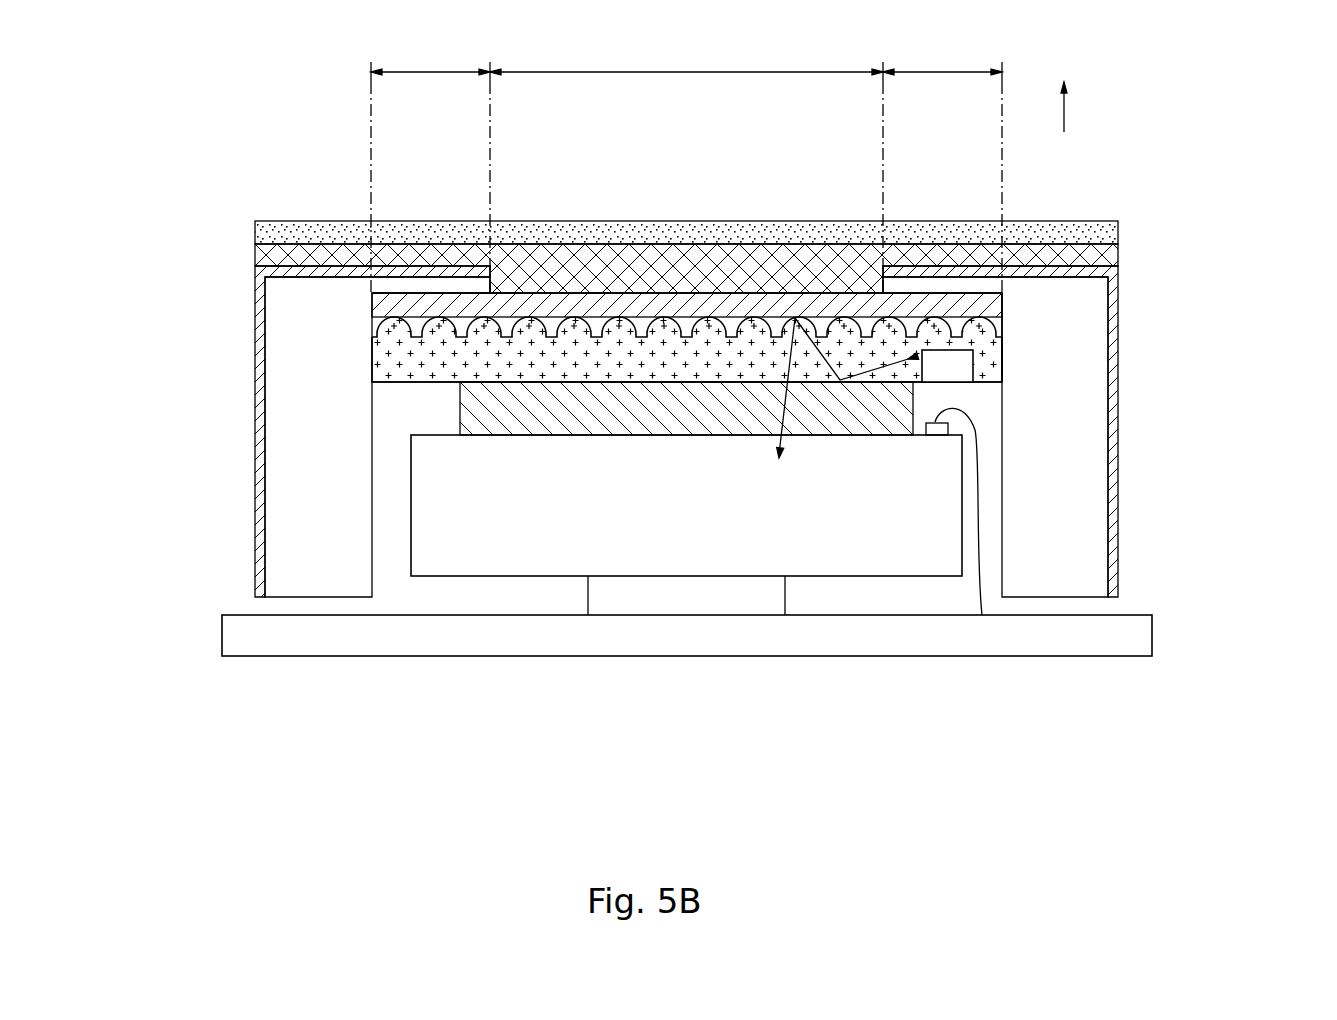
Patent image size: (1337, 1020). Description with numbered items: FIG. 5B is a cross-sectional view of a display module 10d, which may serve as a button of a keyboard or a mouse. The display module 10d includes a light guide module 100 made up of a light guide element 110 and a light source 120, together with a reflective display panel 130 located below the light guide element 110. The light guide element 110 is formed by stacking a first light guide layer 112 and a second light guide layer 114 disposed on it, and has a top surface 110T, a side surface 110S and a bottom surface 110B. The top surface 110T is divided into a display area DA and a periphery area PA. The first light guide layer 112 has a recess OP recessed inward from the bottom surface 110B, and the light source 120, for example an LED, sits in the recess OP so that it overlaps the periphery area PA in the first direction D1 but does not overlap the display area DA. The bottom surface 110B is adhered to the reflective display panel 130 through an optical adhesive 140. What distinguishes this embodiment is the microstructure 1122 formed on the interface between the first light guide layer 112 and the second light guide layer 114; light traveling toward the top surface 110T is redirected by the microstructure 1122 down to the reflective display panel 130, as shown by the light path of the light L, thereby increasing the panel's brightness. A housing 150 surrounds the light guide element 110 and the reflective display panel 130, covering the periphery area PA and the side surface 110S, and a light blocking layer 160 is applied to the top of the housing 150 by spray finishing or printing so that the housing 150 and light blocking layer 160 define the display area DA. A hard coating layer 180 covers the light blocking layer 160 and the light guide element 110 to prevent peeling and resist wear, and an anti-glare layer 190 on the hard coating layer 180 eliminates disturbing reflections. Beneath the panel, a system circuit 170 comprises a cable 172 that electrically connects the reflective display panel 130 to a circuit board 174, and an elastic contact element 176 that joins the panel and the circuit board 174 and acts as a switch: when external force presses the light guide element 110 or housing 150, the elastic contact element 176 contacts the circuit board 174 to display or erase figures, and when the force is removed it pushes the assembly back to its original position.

The display module 10d is at (160, 32).
The light guide module 100 is at (140, 68).
The light guide element 110 is at (1250, 222).
The first light guide layer 112 is at (995, 355).
The second light guide layer 114 is at (995, 312).
The microstructure 1122 is at (932, 322).
The top surface 110T is at (978, 293).
The side surface 110S is at (1003, 370).
The bottom surface 110B is at (990, 392).
The light source 120 is at (950, 368).
The reflective display panel 130 is at (470, 517).
The optical adhesive 140 is at (470, 420).
The housing 150 is at (312, 370).
The light blocking layer 160 is at (262, 316).
The system circuit 170 is at (925, 729).
The cable 172 is at (978, 592).
The circuit board 174 is at (850, 627).
The elastic contact element 176 is at (748, 597).
The hard coating layer 180 is at (262, 252).
The anti-glare layer 190 is at (267, 231).
The recess OP is at (912, 358).
The light L is at (785, 440).
The periphery area PA is at (432, 70).
The display area DA is at (686, 70).
The first direction D1 is at (1066, 110).